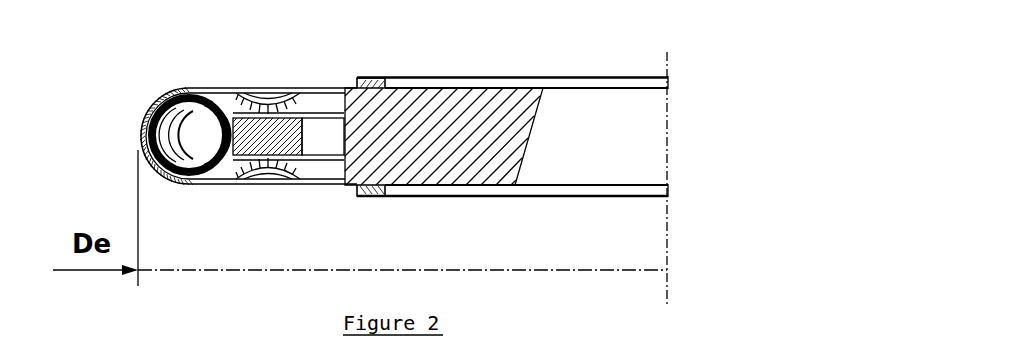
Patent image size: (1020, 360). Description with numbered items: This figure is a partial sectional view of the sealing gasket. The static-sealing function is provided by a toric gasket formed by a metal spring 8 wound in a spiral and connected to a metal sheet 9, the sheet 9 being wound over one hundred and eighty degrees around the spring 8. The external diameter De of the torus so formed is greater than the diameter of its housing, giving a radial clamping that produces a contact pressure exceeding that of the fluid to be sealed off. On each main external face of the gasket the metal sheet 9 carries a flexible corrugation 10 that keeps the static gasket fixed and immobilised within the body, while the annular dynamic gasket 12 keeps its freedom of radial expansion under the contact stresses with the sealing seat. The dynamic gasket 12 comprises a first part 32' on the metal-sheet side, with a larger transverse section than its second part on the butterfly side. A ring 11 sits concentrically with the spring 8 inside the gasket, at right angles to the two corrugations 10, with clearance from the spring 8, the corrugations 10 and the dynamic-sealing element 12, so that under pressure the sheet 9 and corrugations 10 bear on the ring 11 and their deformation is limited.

The metal spring 8 is at (192, 150).
The metal sheet 9 is at (187, 84).
The flexible corrugation 10 is at (267, 98).
The ring 11 is at (250, 142).
The annular dynamic gasket 12 is at (418, 150).
The first part 32' is at (408, 106).